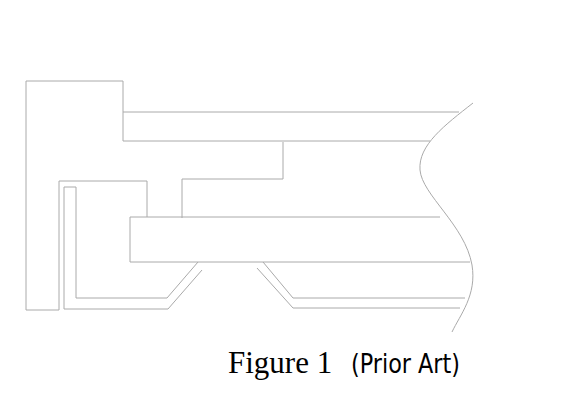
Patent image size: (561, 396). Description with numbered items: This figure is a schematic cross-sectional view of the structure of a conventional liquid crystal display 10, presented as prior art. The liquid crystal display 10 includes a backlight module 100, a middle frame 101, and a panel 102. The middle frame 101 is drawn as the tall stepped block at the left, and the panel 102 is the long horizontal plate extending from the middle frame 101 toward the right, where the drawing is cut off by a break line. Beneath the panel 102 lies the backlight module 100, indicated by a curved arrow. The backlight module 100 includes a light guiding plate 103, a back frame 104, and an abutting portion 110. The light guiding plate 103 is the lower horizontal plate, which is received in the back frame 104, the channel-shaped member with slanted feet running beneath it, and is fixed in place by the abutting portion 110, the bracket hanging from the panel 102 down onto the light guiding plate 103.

The liquid crystal display 10 is at (296, 44).
The backlight module 100 is at (416, 195).
The middle frame 101 is at (81, 74).
The panel 102 is at (210, 113).
The light guiding plate 103 is at (323, 230).
The back frame 104 is at (455, 306).
The abutting portion 110 is at (170, 200).